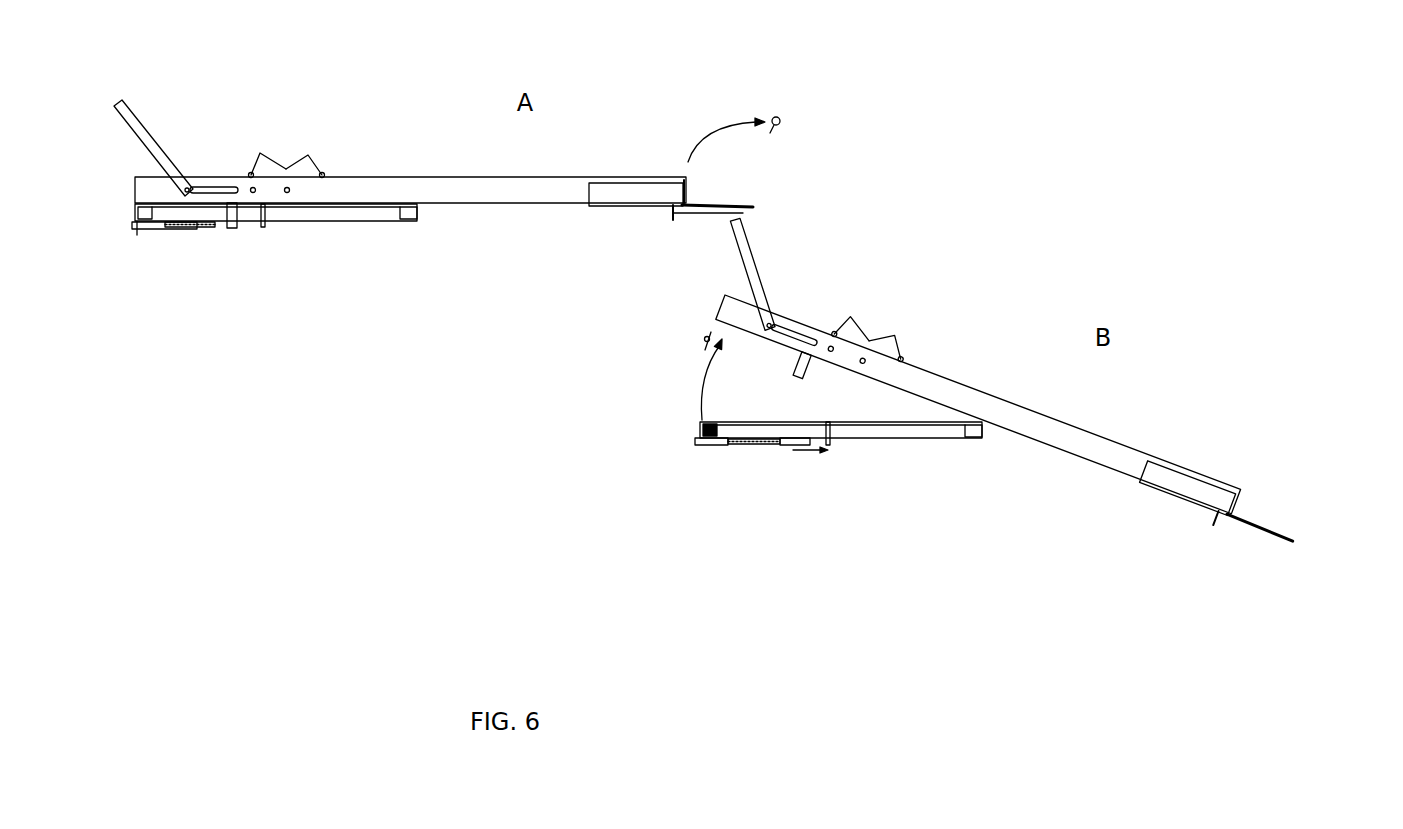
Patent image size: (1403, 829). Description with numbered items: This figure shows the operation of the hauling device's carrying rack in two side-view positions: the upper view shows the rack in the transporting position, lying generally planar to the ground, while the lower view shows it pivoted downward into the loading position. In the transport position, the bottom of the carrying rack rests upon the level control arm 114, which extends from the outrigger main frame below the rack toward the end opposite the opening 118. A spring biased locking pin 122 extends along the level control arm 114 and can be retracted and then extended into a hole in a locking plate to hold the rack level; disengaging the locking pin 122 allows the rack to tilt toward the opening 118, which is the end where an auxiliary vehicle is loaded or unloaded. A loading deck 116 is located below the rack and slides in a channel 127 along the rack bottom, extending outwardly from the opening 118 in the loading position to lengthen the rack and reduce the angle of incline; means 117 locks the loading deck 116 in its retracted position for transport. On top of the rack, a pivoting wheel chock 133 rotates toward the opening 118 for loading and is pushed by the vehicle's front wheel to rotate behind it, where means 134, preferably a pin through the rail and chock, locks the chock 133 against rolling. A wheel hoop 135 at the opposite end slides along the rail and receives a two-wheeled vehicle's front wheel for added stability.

The level control arm 114 is at (318, 222).
The loading deck 116 is at (785, 189).
The means for locking the loading deck 117 is at (760, 134).
The opening 118 is at (686, 190).
The spring biased locking pin 122 is at (185, 227).
The channel 127 is at (602, 197).
The wheel chock 133 is at (308, 162).
The means for locking the chock 134 is at (258, 170).
The wheel hoop 135 is at (125, 107).